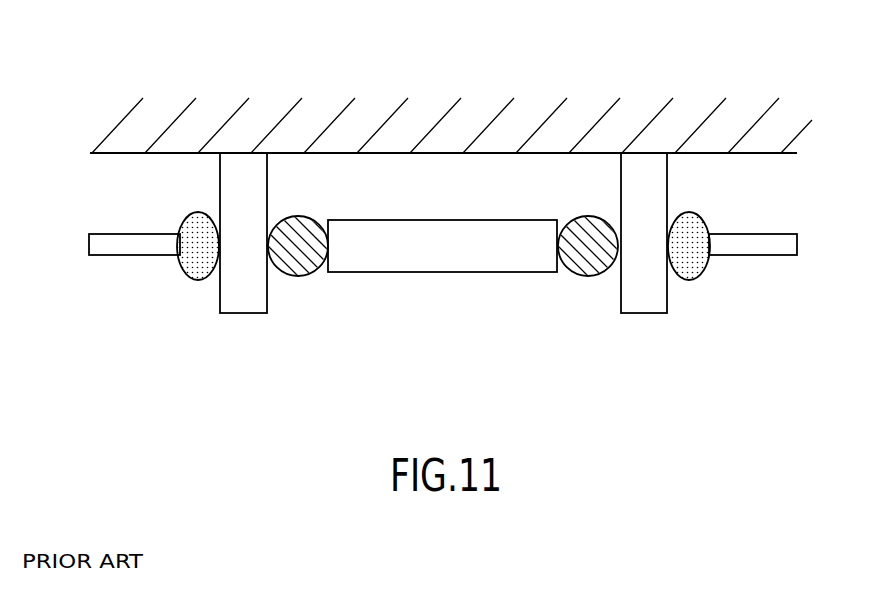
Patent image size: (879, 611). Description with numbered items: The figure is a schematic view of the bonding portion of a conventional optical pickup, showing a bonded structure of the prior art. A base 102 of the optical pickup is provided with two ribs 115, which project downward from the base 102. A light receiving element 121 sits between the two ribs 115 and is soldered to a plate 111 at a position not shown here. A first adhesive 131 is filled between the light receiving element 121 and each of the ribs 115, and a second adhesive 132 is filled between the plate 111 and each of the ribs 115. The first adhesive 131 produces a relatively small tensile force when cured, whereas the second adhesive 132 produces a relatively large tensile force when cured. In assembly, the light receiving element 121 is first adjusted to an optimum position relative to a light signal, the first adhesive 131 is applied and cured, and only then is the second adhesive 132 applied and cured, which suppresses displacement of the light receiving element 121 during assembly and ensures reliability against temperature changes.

The base 102 is at (433, 113).
The plate 111 is at (760, 243).
The ribs 115 is at (243, 177).
The light receiving element 121 is at (440, 258).
The first adhesive 131 is at (293, 258).
The second adhesive 132 is at (200, 257).